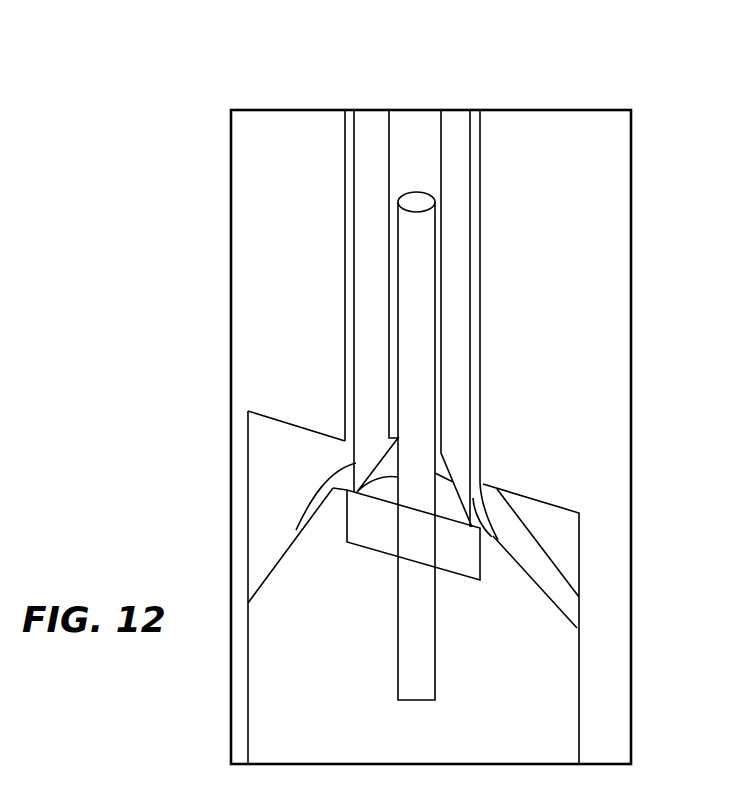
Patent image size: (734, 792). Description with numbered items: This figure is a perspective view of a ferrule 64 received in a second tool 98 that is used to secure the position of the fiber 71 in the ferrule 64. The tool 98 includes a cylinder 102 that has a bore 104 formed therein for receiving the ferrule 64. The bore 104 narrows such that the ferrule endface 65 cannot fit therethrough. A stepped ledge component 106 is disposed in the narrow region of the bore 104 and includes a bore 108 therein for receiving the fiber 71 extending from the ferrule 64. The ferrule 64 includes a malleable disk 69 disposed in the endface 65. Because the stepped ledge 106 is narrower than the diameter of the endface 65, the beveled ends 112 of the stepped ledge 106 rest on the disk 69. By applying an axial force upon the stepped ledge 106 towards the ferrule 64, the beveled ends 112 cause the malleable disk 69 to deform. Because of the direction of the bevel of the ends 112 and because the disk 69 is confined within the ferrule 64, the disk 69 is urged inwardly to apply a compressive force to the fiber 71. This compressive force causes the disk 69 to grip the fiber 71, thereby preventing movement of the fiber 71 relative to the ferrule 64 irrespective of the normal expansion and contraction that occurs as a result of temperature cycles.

The second tool 98 is at (562, 79).
The cylinder 102 is at (572, 257).
The bore 104 is at (260, 480).
The stepped ledge component 106 is at (454, 127).
The bore 108 is at (405, 130).
The fiber 71 is at (415, 345).
The beveled ends 112 is at (476, 512).
The endface 65 is at (493, 520).
The ferrule 64 is at (537, 558).
The malleable disk 69 is at (378, 535).